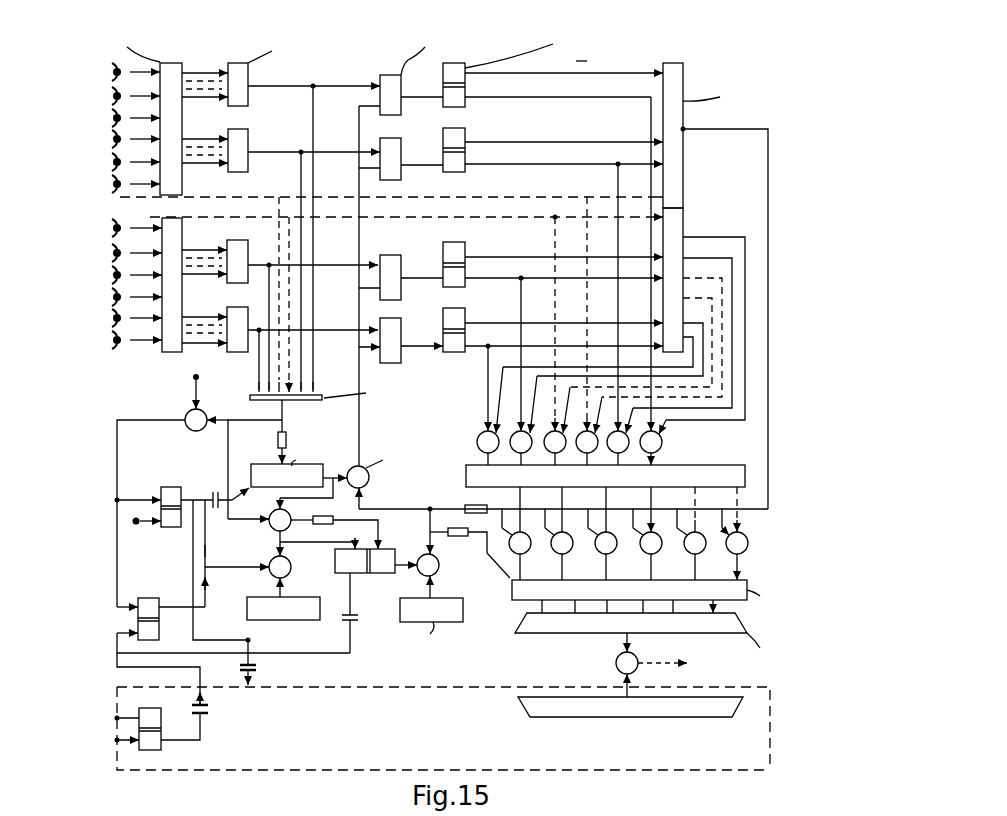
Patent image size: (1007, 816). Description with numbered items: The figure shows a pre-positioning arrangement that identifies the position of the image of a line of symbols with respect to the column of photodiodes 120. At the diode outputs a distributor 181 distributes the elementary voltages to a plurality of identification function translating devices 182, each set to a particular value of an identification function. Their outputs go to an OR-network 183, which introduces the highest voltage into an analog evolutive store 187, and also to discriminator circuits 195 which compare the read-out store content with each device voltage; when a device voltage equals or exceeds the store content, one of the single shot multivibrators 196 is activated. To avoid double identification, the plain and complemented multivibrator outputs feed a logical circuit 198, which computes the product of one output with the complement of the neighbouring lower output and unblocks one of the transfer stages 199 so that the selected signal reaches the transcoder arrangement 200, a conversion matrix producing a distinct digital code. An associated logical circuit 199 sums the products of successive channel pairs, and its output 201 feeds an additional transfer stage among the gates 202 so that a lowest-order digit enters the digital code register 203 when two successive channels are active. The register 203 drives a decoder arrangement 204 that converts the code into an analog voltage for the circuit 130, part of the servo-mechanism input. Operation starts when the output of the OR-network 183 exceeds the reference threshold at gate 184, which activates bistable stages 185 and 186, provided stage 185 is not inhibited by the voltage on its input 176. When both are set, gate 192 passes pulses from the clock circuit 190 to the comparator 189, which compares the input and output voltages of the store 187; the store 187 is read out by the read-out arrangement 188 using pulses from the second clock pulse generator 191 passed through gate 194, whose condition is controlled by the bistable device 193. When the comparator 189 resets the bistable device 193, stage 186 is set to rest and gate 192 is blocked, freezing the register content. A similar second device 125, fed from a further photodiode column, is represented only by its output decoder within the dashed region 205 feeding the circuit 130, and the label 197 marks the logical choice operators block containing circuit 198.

The distributor 181 is at (107, 183).
The identification function translating devices 182 is at (284, 183).
The OR-network 183 is at (343, 259).
The gate 184 is at (199, 484).
The bistable stage 185 is at (174, 499).
The bistable stage 186 is at (233, 625).
The analog evolutive store 187 is at (292, 464).
The read-out arrangement 188 is at (392, 462).
The comparator 189 is at (303, 532).
The clock circuit 190 is at (283, 599).
The second clock pulse generator 191 is at (433, 621).
The gate 192 is at (260, 553).
The bistable device 193 is at (376, 601).
The gate 194 is at (463, 543).
The discriminator circuits 195 is at (447, 240).
The single shot multivibrators 196 is at (647, 194).
The logical choice operators 197 is at (683, 88).
The logical circuit 198 is at (683, 222).
The transfer stages 199 is at (553, 281).
The transcoder arrangement 200 is at (605, 476).
The output 201 is at (725, 313).
The gates 202 is at (569, 533).
The digital code register 203 is at (683, 592).
The decoder arrangement 204 is at (679, 634).
The auxiliary decoder unit 205 is at (702, 696).
The circuit 130 is at (637, 665).
The column of photodiodes 120 is at (391, 208).
The input 176 is at (144, 532).
The device 125 is at (447, 763).